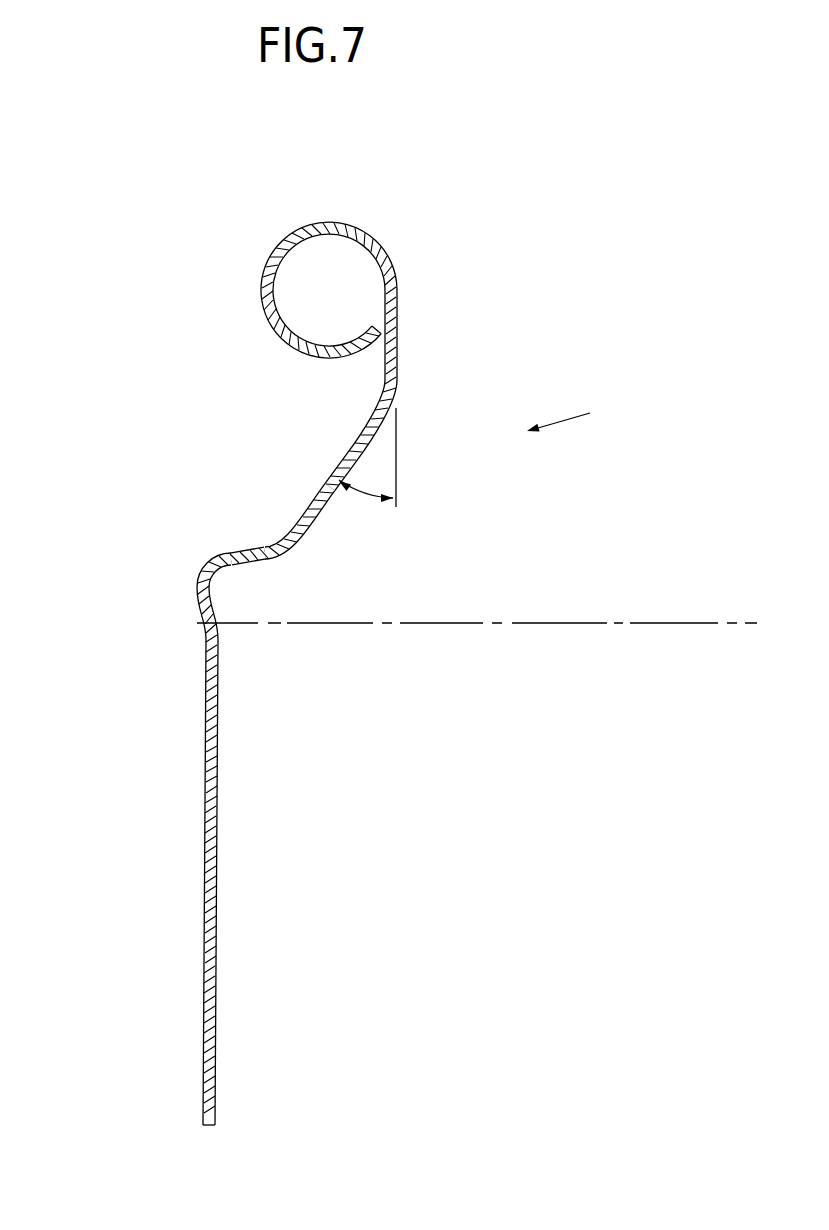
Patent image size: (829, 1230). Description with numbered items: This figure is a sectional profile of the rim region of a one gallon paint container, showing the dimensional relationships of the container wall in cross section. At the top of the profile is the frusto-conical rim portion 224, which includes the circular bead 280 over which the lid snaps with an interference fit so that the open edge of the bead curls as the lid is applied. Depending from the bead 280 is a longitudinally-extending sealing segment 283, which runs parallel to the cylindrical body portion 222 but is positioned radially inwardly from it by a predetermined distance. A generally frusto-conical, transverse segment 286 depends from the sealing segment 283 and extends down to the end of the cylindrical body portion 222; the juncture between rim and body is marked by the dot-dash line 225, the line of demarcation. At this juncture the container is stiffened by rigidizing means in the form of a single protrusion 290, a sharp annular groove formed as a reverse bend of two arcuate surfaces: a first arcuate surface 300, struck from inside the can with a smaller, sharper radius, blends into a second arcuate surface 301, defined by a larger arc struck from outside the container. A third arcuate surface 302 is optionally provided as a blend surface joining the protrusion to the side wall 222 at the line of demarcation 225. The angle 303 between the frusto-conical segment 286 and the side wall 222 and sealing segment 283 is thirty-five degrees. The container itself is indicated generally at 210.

The spring member 210 is at (279, 633).
The cylindrical body portion 222 is at (186, 851).
The frusto-conical rim portion 224 is at (586, 414).
The dot-dash line 225 is at (570, 625).
The circular bead 280 is at (350, 223).
The sealing segment 283 is at (400, 318).
The frusto-conical transverse segment 286 is at (363, 443).
The protrusion 290 is at (213, 558).
The first arcuate surface 300 is at (223, 563).
The second arcuate surface 301 is at (295, 519).
The third arcuate surface 302 is at (207, 642).
The angle 303 is at (367, 503).